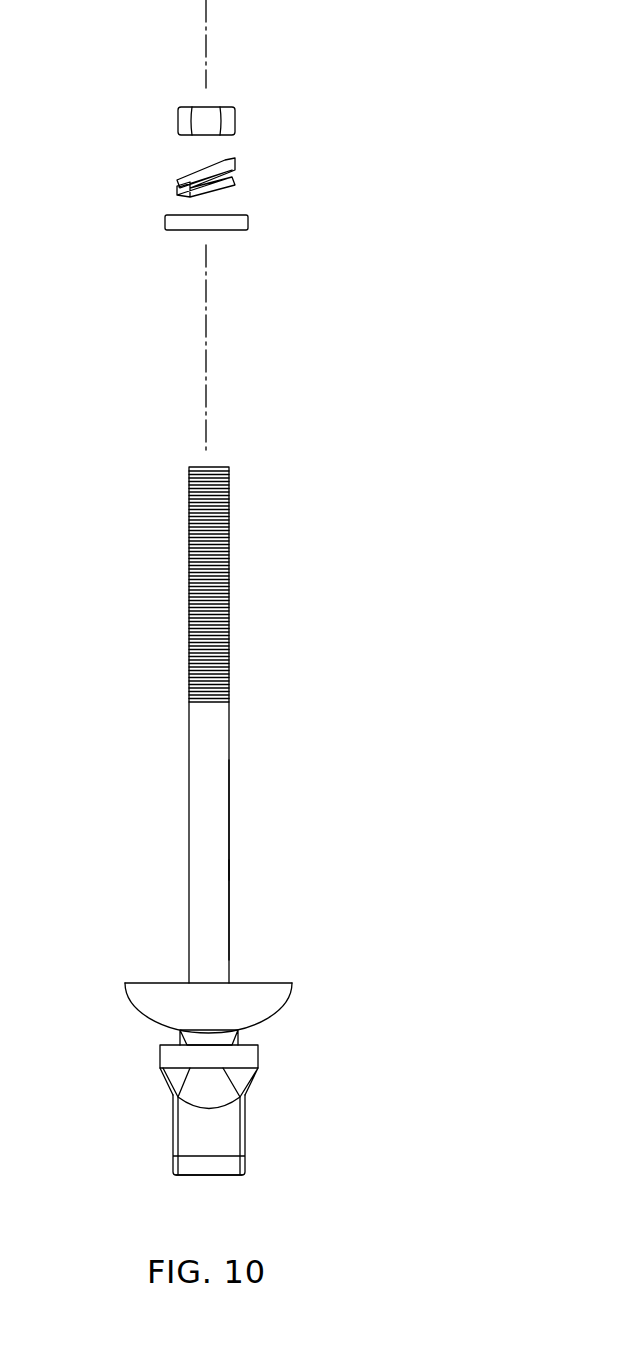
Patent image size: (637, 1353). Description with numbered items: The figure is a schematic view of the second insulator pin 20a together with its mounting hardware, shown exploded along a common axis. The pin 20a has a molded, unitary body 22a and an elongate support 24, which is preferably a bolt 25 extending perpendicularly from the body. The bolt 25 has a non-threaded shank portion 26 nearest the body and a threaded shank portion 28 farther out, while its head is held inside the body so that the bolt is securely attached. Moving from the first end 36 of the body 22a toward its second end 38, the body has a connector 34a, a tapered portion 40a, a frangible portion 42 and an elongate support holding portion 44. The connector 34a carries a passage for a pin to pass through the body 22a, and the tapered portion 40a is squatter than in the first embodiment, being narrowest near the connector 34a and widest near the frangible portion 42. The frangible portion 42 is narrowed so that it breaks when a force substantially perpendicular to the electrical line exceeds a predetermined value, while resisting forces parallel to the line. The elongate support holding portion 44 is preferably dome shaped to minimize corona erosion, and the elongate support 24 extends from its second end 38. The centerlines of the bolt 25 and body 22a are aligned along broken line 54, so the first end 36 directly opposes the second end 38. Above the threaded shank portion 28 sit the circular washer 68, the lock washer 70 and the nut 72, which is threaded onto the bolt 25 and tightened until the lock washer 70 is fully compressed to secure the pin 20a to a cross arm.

The insulator pin 20a is at (348, 745).
The body 22a is at (294, 1113).
The elongate support 24 is at (194, 816).
The bolt 25 is at (228, 828).
The non-threaded shank portion 26 is at (228, 882).
The threaded shank portion 28 is at (229, 606).
The connector 34a is at (228, 1165).
The first end 36 is at (200, 1177).
The second end 38 is at (247, 983).
The tapered portion 40a is at (160, 1062).
The frangible portion 42 is at (240, 1034).
The elongate support holding portion 44 is at (277, 1002).
The broken line 54 is at (208, 318).
The circular washer 68 is at (249, 225).
The lock washer 70 is at (236, 180).
The nut 72 is at (236, 109).